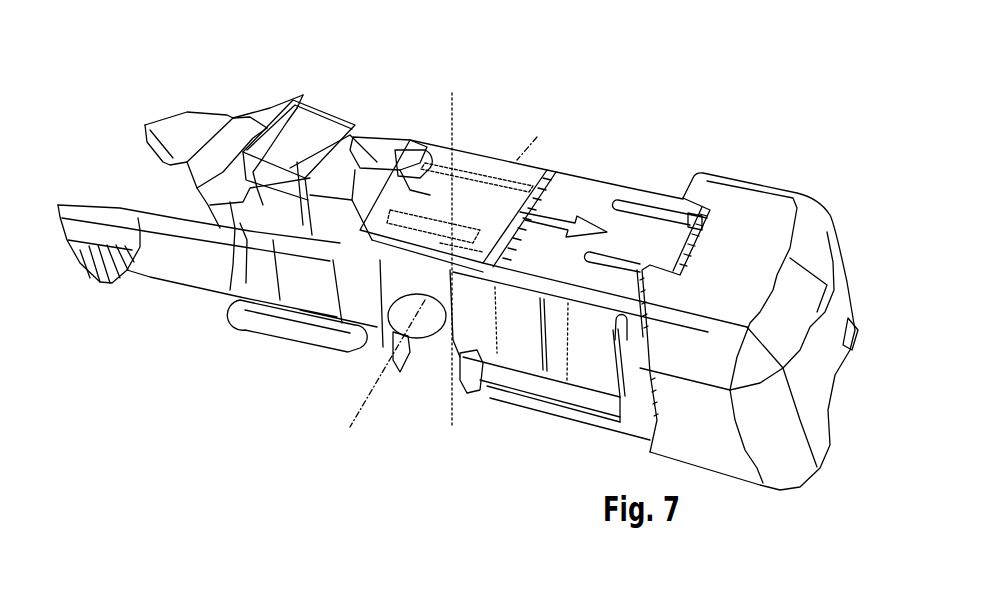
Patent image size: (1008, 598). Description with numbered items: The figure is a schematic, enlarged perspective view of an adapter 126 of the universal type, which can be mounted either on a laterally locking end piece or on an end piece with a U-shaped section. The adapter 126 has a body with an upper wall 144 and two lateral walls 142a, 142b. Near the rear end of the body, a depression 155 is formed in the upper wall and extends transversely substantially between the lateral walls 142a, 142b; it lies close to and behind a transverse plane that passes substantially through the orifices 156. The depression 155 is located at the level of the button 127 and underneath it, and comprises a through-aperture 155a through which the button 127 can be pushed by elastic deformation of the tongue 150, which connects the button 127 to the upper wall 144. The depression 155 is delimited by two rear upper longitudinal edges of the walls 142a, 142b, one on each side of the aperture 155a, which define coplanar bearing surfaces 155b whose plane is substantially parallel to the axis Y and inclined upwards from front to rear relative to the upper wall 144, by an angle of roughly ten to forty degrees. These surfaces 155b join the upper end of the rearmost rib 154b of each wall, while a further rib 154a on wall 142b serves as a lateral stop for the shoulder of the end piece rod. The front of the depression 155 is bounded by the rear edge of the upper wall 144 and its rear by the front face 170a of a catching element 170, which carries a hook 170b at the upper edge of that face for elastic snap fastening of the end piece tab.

The adapter 126 is at (705, 127).
The button 127 is at (315, 128).
The lateral wall 142a is at (477, 350).
The lateral wall 142b is at (607, 183).
The upper wall 144 is at (562, 190).
The tongue 150 is at (378, 170).
The rib 154a is at (407, 350).
The rear rib 154b is at (258, 280).
The depression 155 is at (358, 140).
The through-aperture 155a is at (247, 199).
The bearing surfaces 155b is at (253, 220).
The orifices 156 is at (427, 330).
The catching element 170 is at (197, 98).
The front face 170a is at (287, 100).
The hook 170b is at (253, 133).
The axis Y is at (360, 405).